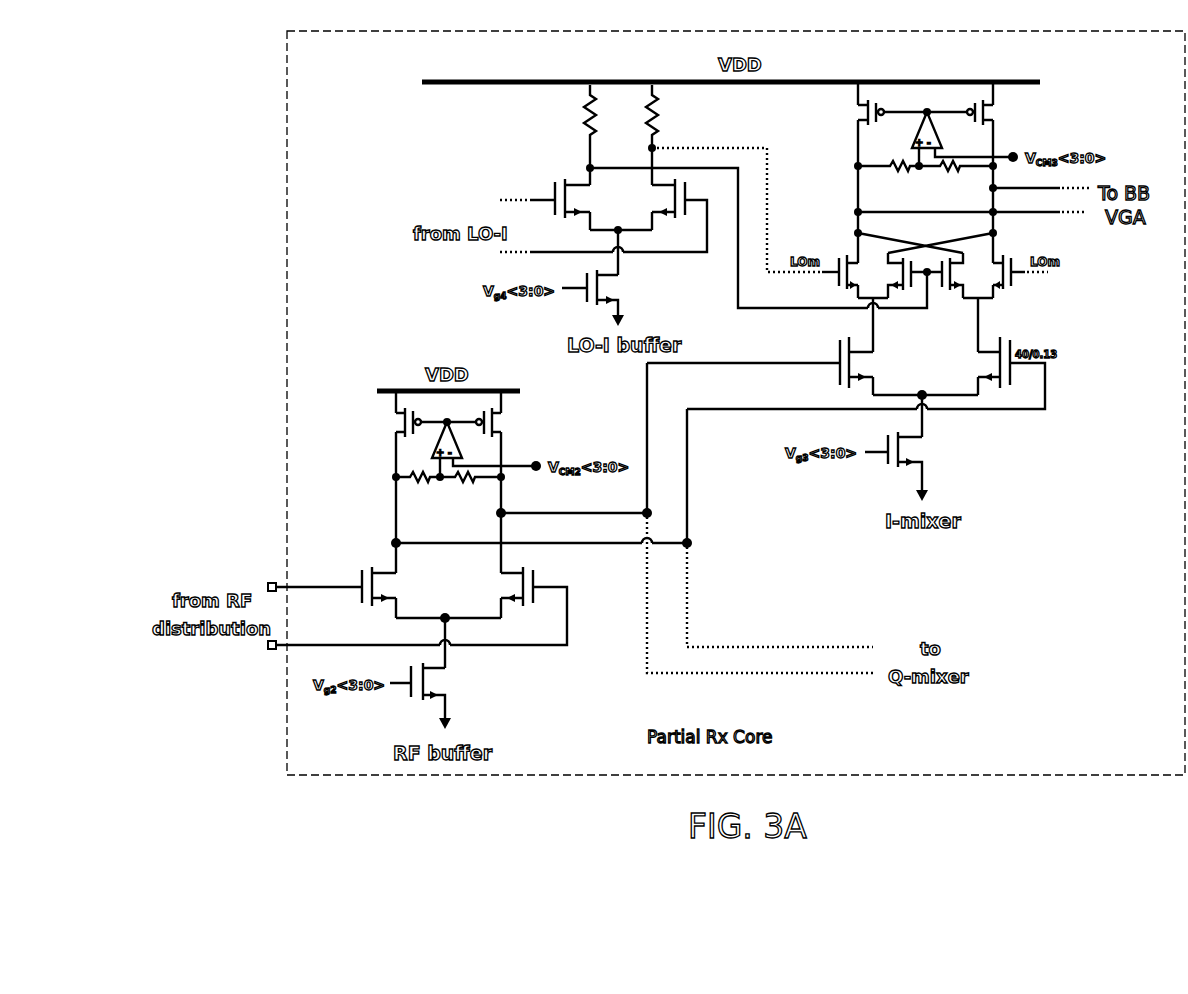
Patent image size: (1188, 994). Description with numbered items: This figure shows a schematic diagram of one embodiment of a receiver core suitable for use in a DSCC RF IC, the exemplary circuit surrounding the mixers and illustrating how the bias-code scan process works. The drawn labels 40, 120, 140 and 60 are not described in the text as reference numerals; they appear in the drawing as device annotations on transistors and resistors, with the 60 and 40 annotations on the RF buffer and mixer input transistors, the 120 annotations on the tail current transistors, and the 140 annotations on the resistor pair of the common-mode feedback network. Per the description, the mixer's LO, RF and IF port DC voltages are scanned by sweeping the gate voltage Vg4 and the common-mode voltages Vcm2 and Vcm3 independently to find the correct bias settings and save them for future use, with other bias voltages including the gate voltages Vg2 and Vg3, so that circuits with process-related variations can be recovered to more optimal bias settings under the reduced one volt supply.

The 40/0.13 mixer input transistor 40 is at (760, 362).
The 120/0.13 tail current transistor 120 is at (678, 580).
The 140 ohm common-mode sensing resistor 140 is at (448, 486).
The 60/0.13 RF buffer input transistor 60 is at (421, 606).